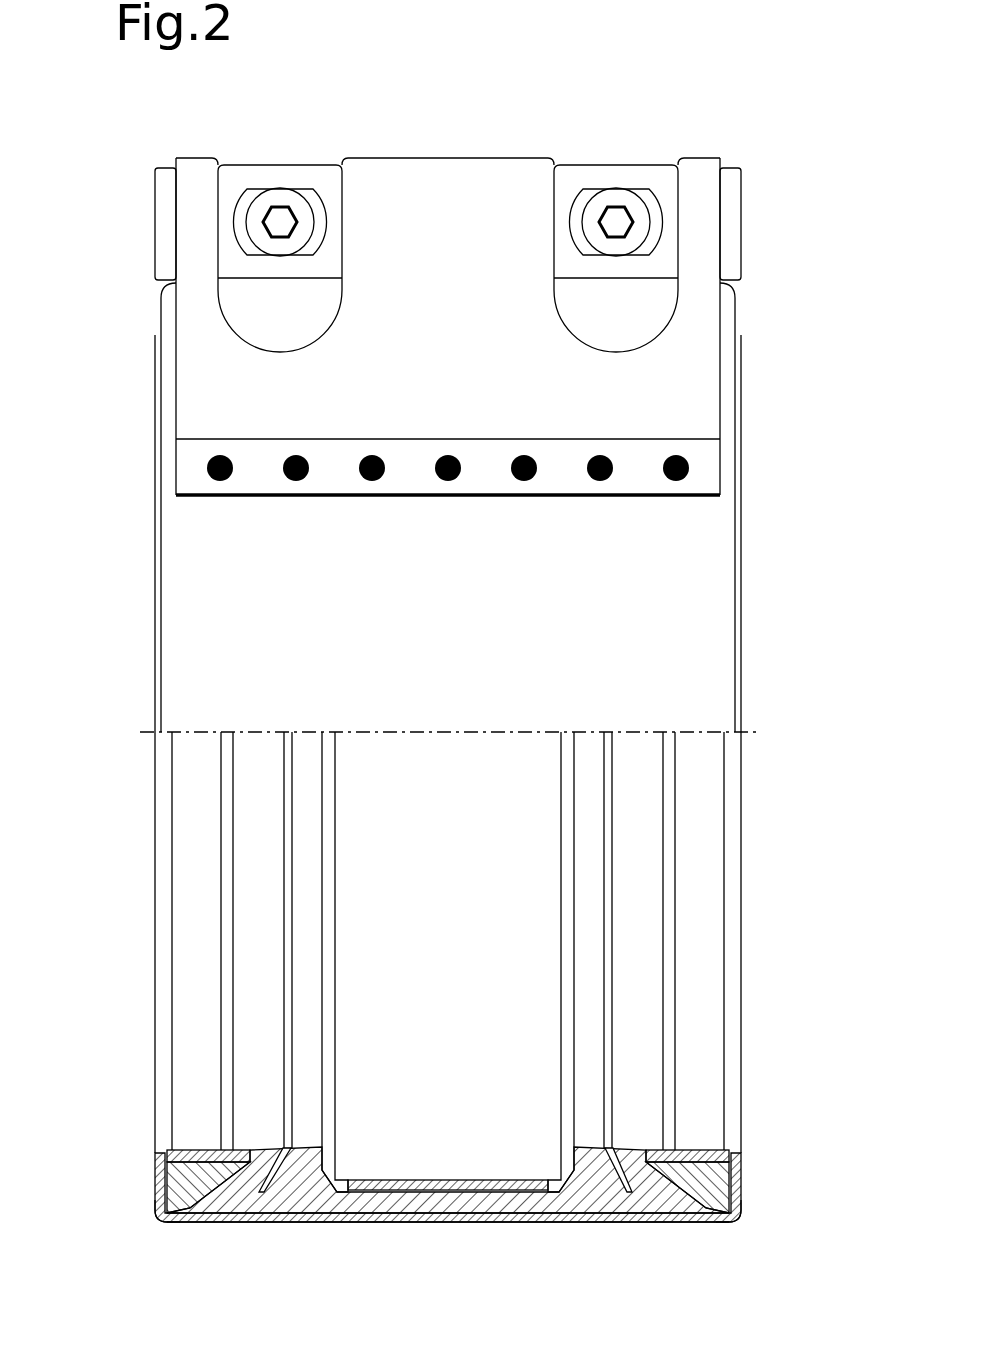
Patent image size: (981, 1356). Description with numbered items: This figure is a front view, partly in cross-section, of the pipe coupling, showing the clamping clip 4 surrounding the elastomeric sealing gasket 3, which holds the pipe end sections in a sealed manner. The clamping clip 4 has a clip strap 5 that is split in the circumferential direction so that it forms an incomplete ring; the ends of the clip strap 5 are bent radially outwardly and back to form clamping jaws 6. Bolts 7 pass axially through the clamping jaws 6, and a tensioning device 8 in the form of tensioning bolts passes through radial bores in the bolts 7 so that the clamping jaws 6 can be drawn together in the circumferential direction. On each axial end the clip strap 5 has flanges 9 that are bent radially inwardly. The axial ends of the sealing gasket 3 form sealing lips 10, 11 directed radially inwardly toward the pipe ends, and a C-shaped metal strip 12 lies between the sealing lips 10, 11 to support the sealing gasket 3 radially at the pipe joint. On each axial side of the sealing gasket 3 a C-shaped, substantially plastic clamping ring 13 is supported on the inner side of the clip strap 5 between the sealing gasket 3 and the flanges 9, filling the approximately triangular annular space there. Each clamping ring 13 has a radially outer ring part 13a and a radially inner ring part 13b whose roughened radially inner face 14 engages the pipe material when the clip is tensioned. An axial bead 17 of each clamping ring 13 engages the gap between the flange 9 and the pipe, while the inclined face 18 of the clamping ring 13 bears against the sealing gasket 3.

The sealing gasket 3 is at (360, 1224).
The clamping clip 4 is at (609, 1224).
The clip strap 5 is at (563, 1224).
The clamping jaws 6 is at (397, 156).
The bolts 7 is at (317, 178).
The tensioning device 8 is at (257, 195).
The flanges 9 is at (158, 1200).
The sealing lip 10 is at (258, 1150).
The sealing lip 11 is at (590, 1150).
The metal strip 12 is at (503, 1224).
The clamping ring 13 is at (156, 1132).
The radially outer ring part 13a is at (175, 1212).
The radially inner ring part 13b is at (170, 1085).
The radially inner face 14 is at (190, 1018).
The axial bead 17 is at (162, 1163).
The face 18 is at (214, 1224).